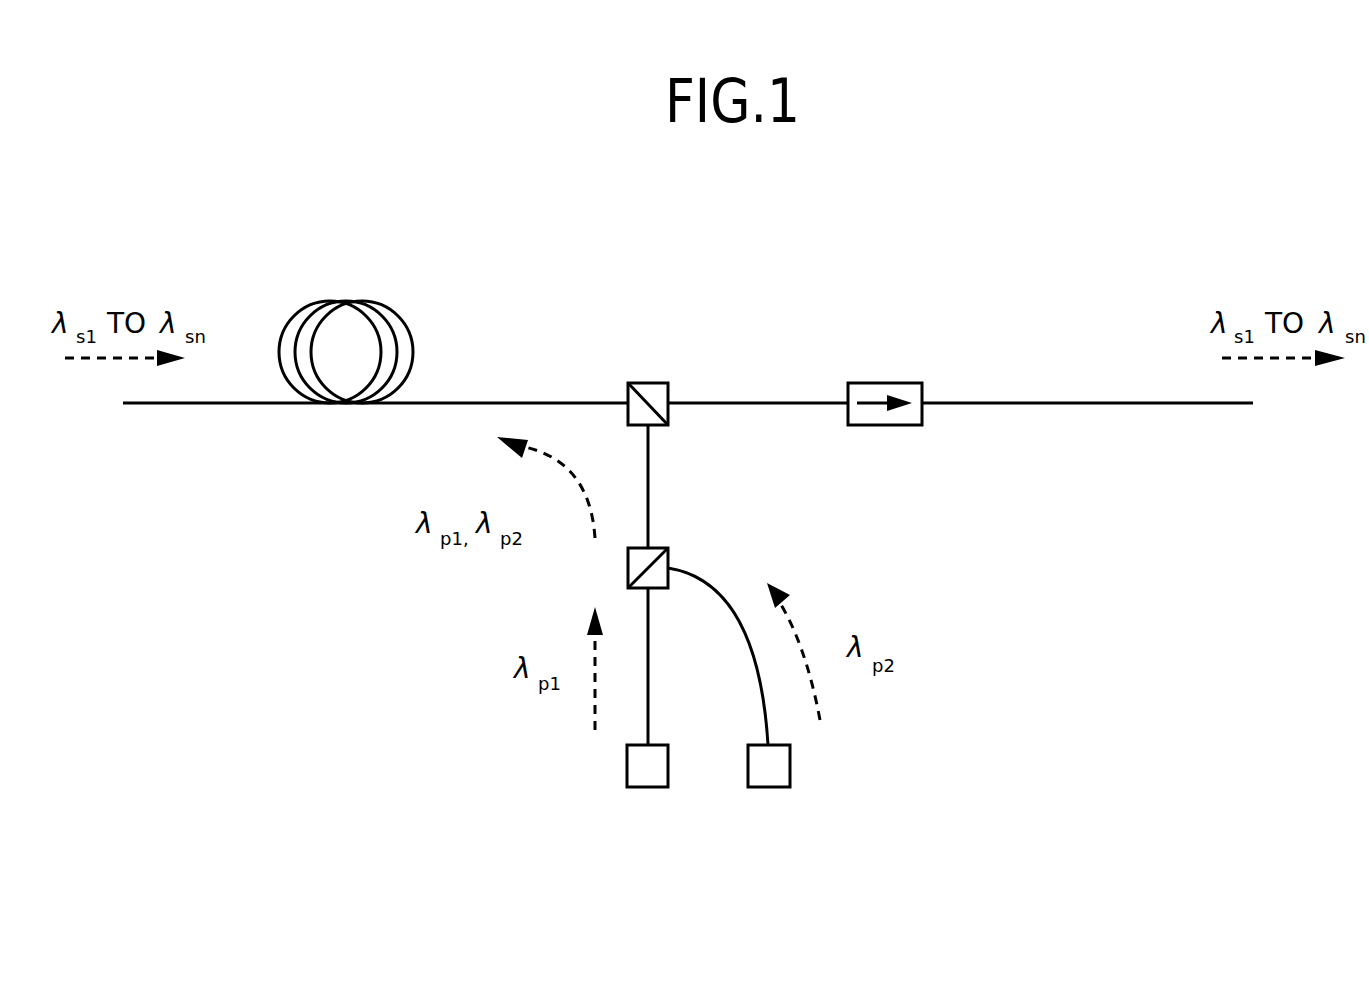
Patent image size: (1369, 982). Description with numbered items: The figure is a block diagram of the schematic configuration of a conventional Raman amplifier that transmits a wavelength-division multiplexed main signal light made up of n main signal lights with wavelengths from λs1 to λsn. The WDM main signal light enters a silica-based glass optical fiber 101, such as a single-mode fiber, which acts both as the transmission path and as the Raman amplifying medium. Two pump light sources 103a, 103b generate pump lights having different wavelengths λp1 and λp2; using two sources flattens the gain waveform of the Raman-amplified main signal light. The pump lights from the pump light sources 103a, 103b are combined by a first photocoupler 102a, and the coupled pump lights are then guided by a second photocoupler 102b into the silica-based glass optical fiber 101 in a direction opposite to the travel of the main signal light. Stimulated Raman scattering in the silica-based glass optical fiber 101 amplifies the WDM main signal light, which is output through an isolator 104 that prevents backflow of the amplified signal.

The silica-based glass optical fiber 101 is at (397, 313).
The first photocoupler 102a is at (662, 548).
The second photocoupler 102b is at (660, 383).
The pump light source 103a is at (627, 770).
The pump light source 103b is at (790, 770).
The isolator 104 is at (902, 383).